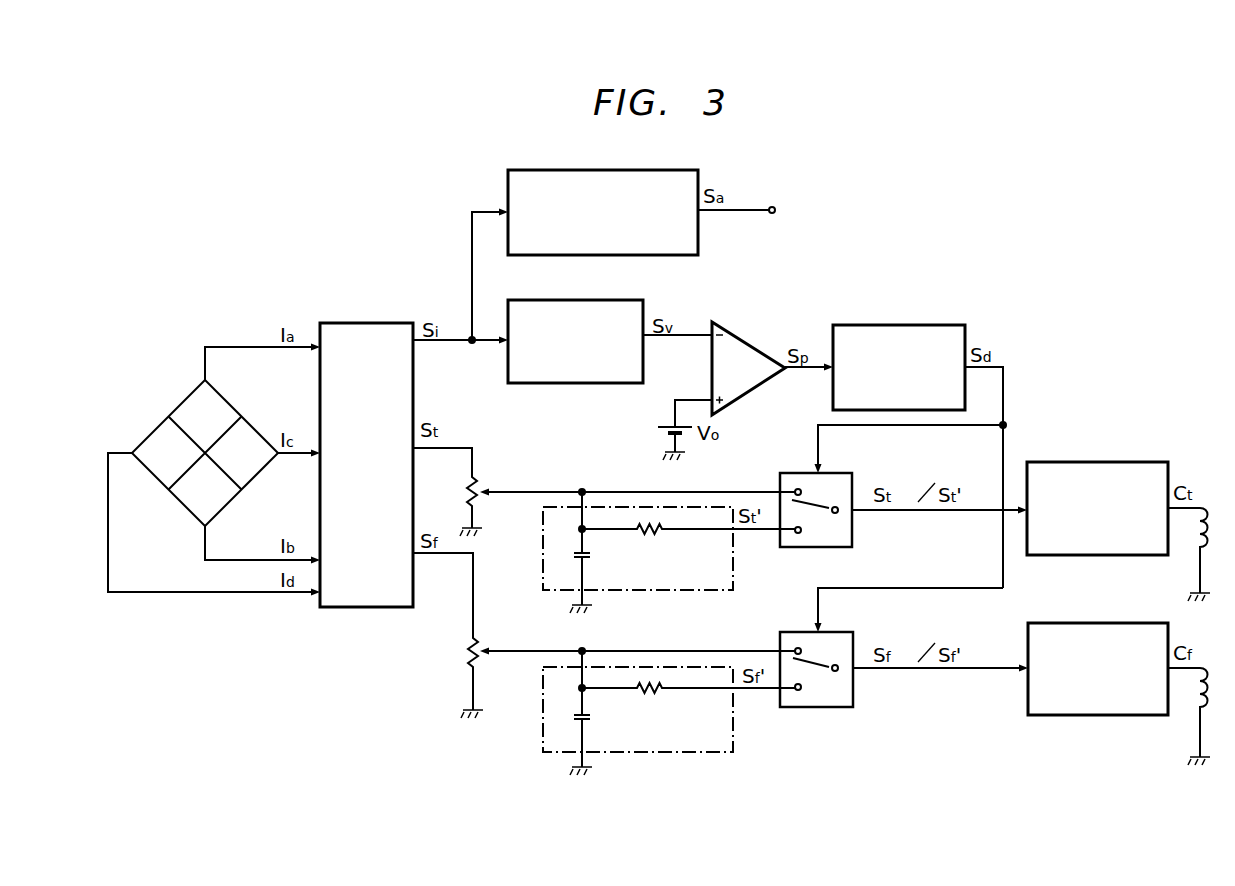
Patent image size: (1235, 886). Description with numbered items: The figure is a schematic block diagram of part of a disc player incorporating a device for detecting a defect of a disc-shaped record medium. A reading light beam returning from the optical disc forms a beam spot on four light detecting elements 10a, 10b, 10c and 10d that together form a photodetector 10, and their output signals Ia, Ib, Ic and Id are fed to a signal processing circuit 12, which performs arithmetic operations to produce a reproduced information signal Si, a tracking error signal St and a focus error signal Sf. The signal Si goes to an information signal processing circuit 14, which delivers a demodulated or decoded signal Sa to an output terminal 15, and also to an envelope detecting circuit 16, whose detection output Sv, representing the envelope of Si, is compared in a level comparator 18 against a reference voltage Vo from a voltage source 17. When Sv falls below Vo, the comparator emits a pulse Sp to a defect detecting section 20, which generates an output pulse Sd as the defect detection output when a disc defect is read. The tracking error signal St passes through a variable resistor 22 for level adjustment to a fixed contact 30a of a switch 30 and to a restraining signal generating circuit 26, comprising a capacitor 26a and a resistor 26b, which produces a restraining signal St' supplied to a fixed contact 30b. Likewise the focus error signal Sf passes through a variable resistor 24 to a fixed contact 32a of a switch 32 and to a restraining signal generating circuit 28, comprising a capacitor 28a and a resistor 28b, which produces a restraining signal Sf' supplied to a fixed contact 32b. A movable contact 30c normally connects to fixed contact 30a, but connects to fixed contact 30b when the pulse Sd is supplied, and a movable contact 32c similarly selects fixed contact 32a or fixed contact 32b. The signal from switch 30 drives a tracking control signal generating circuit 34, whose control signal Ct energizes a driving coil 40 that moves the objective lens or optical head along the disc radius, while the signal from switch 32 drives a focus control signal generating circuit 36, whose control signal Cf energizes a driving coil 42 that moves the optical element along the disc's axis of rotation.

The photodetector 10 is at (202, 441).
The light detecting element 10a is at (218, 413).
The light detecting element 10b is at (180, 493).
The light detecting element 10c is at (253, 467).
The light detecting element 10d is at (150, 450).
The signal processing circuit 12 is at (342, 323).
The information signal processing circuit 14 is at (525, 170).
The output terminal 15 is at (773, 214).
The envelope detecting circuit 16 is at (527, 385).
The voltage source 17 is at (657, 433).
The level comparator 18 is at (748, 342).
The defect detecting section 20 is at (937, 325).
The variable resistor 22 is at (485, 485).
The variable resistor 24 is at (482, 645).
The restraining signal generating circuit 26 is at (669, 564).
The capacitor 26a is at (597, 555).
The resistor 26b is at (660, 537).
The restraining signal generating circuit 28 is at (669, 719).
The capacitor 28a is at (593, 715).
The resistor 28b is at (660, 697).
The switch 30 is at (828, 510).
The fixed contact 30a is at (797, 487).
The fixed contact 30b is at (800, 535).
The movable contact 30c is at (838, 513).
The switch 32 is at (822, 680).
The fixed contact 32a is at (797, 647).
The fixed contact 32b is at (800, 690).
The movable contact 32c is at (838, 672).
The tracking control signal generating circuit 34 is at (1142, 460).
The focus control signal generating circuit 36 is at (1043, 620).
The driving coil 40 is at (1190, 528).
The driving coil 42 is at (1193, 697).